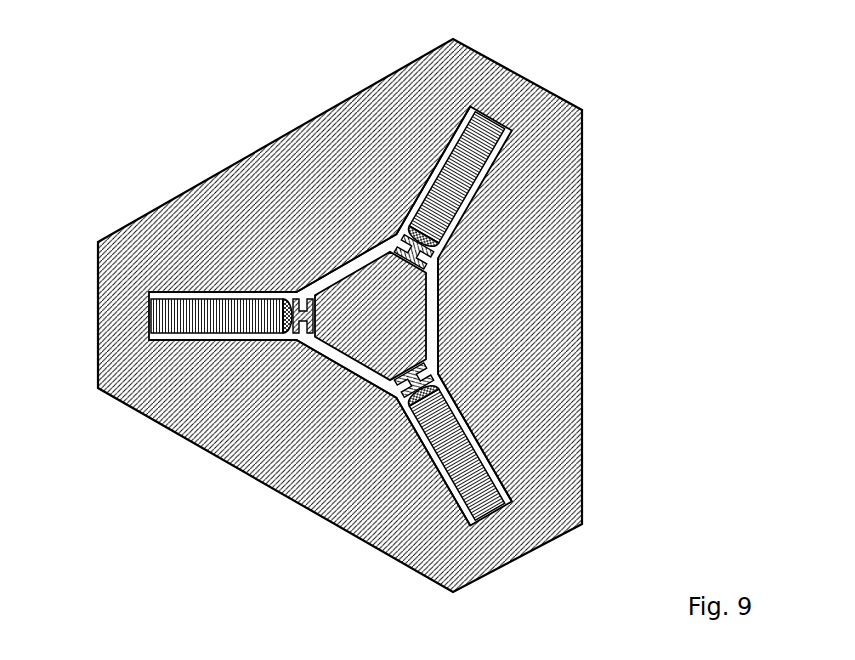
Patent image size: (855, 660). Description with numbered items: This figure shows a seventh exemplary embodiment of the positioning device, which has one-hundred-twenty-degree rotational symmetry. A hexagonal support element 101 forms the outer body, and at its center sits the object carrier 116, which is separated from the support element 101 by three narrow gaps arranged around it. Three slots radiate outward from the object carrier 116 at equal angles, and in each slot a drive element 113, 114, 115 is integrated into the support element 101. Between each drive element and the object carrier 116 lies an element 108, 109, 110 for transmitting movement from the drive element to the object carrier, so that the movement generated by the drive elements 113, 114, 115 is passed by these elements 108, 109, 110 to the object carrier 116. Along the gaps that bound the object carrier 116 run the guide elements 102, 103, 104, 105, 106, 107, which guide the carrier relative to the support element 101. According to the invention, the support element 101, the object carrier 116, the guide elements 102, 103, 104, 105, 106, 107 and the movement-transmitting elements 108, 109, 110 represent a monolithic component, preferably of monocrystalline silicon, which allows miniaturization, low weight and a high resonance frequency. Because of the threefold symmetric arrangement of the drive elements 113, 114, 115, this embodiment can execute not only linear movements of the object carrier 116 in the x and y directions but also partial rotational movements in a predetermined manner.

The support element 101 is at (518, 93).
The guide element 102 is at (388, 250).
The guide element 103 is at (437, 272).
The guide element 104 is at (437, 362).
The guide element 105 is at (388, 385).
The guide element 106 is at (314, 340).
The guide element 107 is at (314, 292).
The element for transmitting movement from the drive element to the object carrier 108 is at (418, 242).
The element for transmitting movement from the drive element to the object carrier 109 is at (423, 385).
The element for transmitting movement from the drive element to the object carrier 110 is at (288, 318).
The drive element 113 is at (463, 175).
The drive element 114 is at (470, 480).
The drive element 115 is at (175, 316).
The object carrier 116 is at (400, 318).